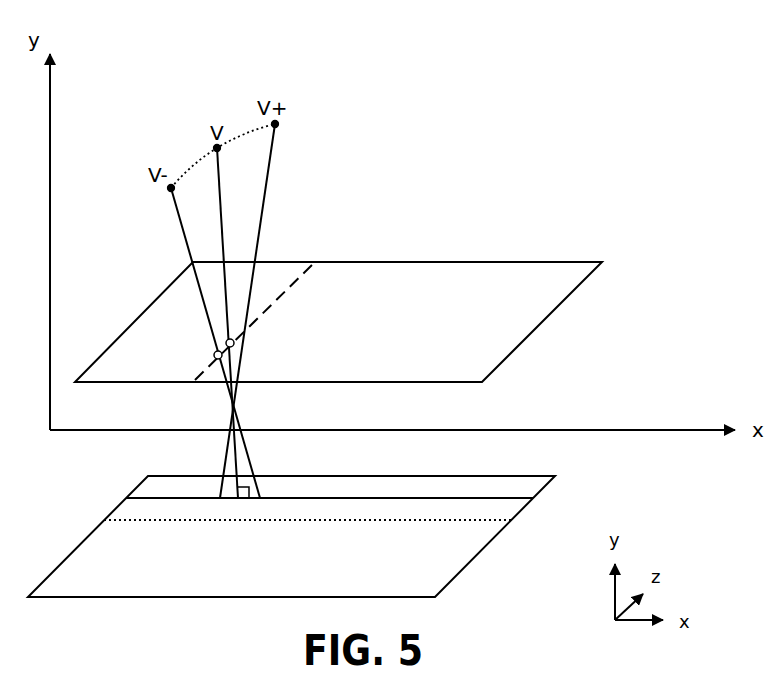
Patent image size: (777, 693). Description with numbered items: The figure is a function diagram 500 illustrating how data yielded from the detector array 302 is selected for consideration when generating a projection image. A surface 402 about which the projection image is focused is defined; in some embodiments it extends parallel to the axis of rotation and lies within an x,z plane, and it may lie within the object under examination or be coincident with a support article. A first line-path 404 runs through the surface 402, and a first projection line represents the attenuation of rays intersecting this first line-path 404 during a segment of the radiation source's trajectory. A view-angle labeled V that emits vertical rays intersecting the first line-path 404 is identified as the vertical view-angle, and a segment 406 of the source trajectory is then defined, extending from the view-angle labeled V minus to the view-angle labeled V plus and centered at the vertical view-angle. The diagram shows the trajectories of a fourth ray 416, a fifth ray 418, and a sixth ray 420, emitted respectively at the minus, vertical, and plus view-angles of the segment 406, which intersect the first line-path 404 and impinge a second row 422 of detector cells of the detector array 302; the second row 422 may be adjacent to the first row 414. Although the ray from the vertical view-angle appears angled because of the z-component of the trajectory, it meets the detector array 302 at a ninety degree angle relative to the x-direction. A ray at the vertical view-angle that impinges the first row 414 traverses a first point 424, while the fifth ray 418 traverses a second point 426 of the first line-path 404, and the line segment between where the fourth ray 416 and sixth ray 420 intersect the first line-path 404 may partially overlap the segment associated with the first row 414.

The function diagram 500 is at (586, 68).
The detector array 302 is at (523, 476).
The surface 402 is at (540, 261).
The first line-path 404 is at (286, 292).
The segment 406 is at (193, 163).
The first row 414 is at (297, 521).
The fourth ray 416 is at (186, 240).
The fifth ray 418 is at (221, 197).
The sixth ray 420 is at (271, 148).
The second row 422 is at (428, 499).
The first point 424 is at (214, 353).
The second point 426 is at (234, 341).